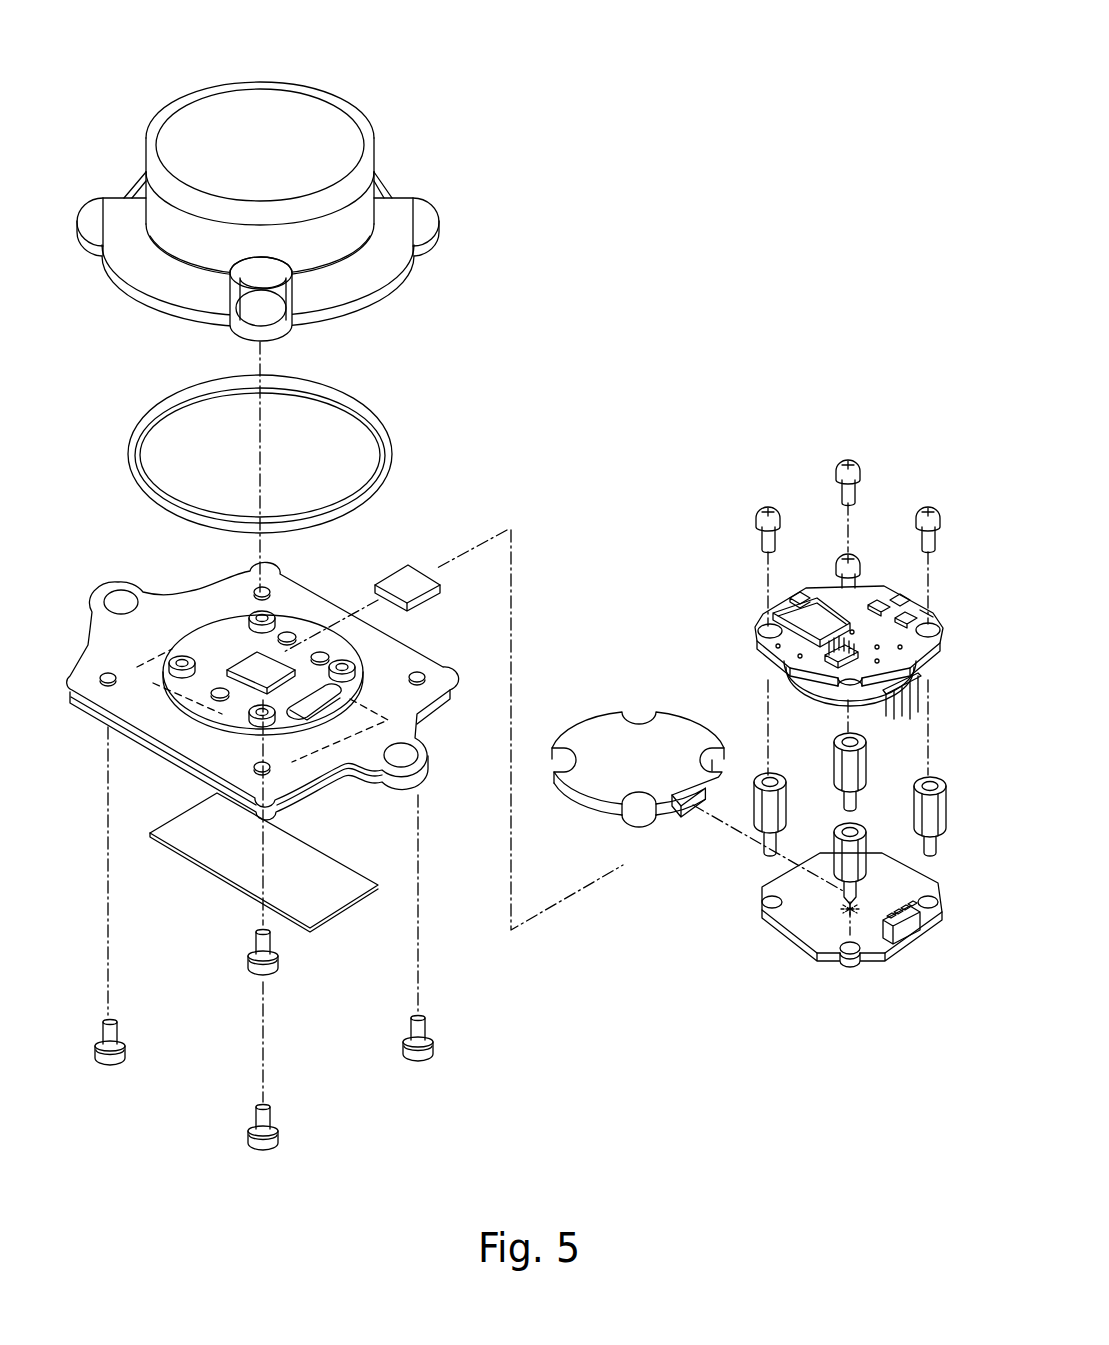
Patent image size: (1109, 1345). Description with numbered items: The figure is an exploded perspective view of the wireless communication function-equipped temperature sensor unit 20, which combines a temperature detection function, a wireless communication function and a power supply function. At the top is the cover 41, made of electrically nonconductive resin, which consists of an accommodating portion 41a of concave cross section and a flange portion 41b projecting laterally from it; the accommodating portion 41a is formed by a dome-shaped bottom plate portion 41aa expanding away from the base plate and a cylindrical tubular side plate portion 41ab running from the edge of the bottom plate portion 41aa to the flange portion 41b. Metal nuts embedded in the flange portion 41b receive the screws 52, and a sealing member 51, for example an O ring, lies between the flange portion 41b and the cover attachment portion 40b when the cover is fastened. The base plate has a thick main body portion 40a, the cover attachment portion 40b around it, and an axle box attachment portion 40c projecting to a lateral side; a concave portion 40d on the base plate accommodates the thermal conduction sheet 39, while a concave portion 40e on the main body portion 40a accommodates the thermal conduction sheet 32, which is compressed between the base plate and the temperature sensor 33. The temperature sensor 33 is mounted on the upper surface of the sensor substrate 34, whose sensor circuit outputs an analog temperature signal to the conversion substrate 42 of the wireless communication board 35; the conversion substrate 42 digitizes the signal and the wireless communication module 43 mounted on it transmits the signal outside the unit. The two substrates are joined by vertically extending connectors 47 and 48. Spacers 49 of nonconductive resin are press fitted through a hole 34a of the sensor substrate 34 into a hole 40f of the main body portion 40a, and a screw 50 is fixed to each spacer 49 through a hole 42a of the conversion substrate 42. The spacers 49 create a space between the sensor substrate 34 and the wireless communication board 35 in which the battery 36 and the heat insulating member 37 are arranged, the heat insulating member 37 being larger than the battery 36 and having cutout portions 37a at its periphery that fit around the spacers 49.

The wireless communication function-equipped temperature sensor unit 20 is at (647, 222).
The thermal conduction sheet 32 is at (400, 568).
The temperature sensor 33 is at (845, 912).
The sensor substrate 34 is at (812, 948).
The hole 34a is at (762, 893).
The wireless communication board 35 is at (935, 617).
The battery 36 is at (820, 698).
The heat insulating member 37 is at (598, 716).
The cutout portion 37a is at (630, 816).
The thermal conduction sheet 39 is at (337, 905).
The main body portion 40a is at (212, 638).
The cover attachment portion 40b is at (438, 666).
The axle box attachment portion 40c is at (432, 770).
The concave portion 40d is at (292, 762).
The concave portion 40e is at (290, 641).
The hole 40f is at (126, 600).
The cover 41 is at (328, 97).
The accommodating portion 41a is at (368, 127).
The bottom plate portion 41aa is at (212, 108).
The tubular side plate portion 41ab is at (186, 233).
The flange portion 41b is at (363, 290).
The conversion substrate 42 is at (760, 664).
The hole 42a is at (758, 631).
The wireless communication module 43 is at (792, 604).
The connector 47 is at (922, 690).
The connector 48 is at (892, 938).
The spacer 49 is at (752, 818).
The screw 50 is at (768, 505).
The sealing member 51 is at (392, 440).
The screw 52 is at (430, 1028).